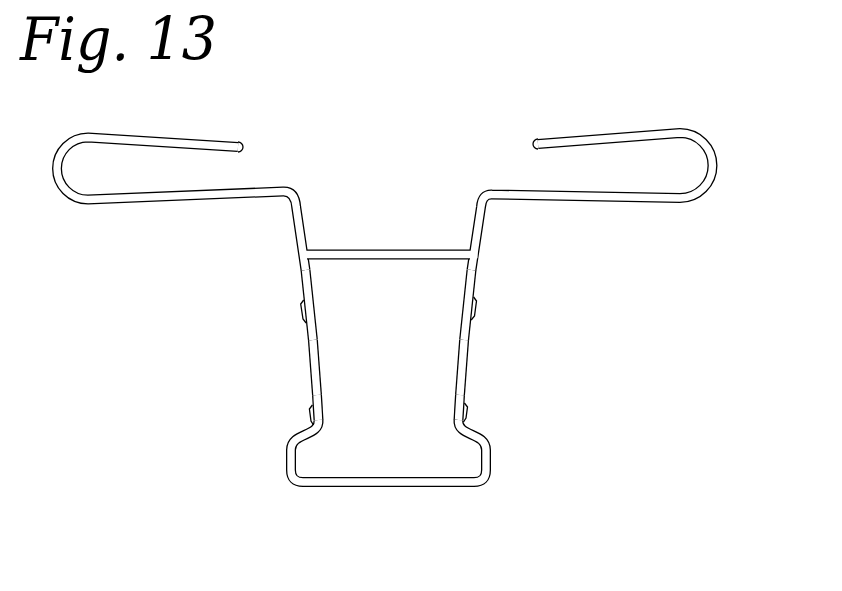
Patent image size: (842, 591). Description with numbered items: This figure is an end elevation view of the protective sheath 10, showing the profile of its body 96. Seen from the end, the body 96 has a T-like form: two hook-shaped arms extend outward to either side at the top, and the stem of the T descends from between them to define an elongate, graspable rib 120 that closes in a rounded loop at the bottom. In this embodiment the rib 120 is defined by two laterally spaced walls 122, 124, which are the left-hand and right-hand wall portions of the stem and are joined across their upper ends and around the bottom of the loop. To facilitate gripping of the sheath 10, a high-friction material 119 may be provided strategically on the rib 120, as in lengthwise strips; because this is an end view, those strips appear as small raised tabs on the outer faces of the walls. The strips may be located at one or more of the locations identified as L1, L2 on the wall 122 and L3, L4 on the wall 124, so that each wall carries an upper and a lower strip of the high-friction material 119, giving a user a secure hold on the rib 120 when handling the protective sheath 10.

The protective sheath 10 is at (258, 224).
The body 96 is at (482, 233).
The high-friction material 119 is at (476, 301).
The graspable rib 120 is at (353, 490).
The wall 122 is at (467, 365).
The wall 124 is at (310, 369).
The location L1 is at (476, 309).
The location L2 is at (467, 411).
The location L3 is at (301, 317).
The location L4 is at (310, 413).